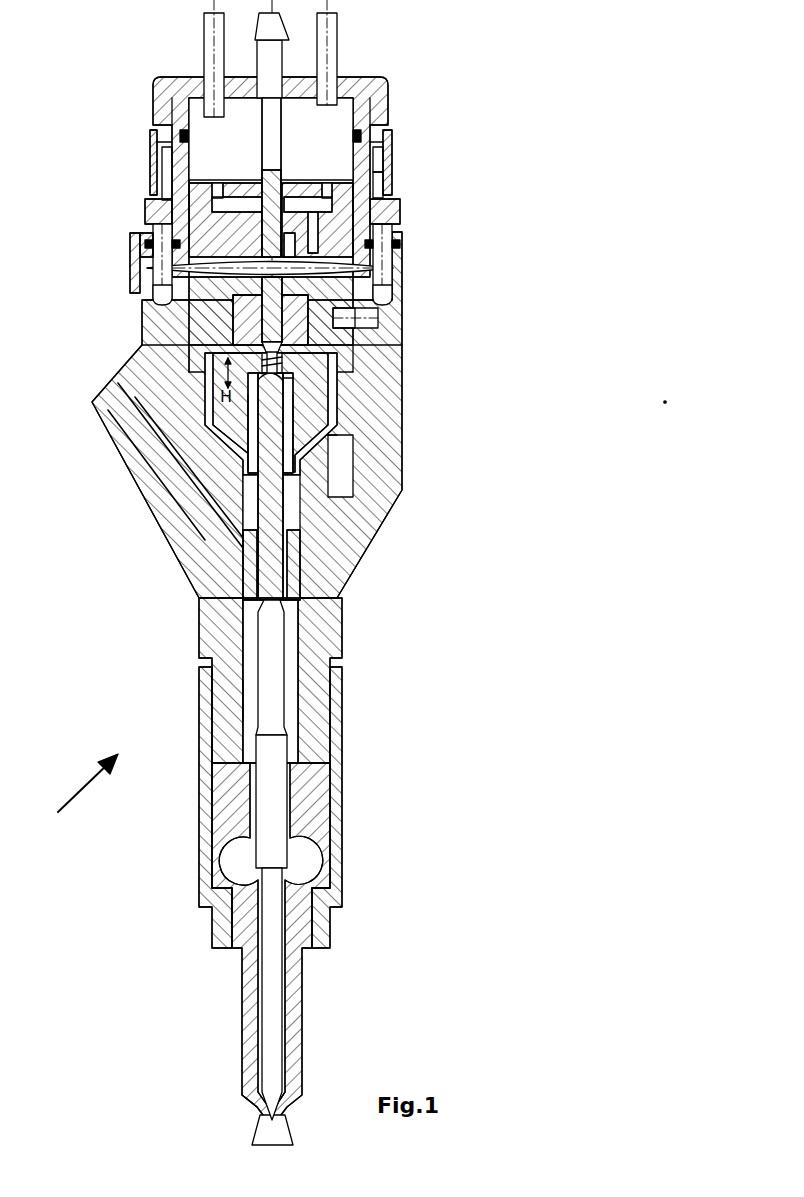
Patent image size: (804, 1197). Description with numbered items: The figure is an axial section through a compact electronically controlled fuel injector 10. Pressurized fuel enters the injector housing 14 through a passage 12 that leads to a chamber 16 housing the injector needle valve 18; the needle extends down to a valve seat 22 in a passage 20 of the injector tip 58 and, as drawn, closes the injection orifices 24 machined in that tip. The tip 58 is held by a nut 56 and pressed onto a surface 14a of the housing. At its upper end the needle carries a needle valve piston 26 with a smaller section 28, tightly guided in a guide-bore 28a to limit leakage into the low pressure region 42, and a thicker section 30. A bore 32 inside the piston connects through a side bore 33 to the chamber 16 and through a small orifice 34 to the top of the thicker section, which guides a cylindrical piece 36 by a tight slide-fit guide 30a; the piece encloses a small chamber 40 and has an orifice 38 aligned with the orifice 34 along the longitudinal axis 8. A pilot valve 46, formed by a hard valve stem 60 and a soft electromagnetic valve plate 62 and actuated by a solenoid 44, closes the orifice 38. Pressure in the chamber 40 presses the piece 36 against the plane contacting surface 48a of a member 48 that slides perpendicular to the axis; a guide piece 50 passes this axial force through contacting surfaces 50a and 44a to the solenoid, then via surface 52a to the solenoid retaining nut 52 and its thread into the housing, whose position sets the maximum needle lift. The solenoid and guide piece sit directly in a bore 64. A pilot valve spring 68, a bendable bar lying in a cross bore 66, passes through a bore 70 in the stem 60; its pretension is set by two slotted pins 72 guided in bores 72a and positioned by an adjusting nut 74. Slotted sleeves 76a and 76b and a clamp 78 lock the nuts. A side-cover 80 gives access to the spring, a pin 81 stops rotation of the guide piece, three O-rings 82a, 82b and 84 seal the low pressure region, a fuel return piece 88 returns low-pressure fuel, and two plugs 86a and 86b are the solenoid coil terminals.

The longitudinal axis 8 is at (275, 805).
The fuel injector 10 is at (71, 793).
The passage 12 is at (218, 528).
The injector housing 14 is at (222, 625).
The surface of the injector housing 14a is at (230, 807).
The space or chamber 16 is at (290, 677).
The injector needle valve 18 is at (265, 697).
The passage 20 is at (262, 1043).
The valve seat 22 is at (252, 1105).
The injection orifices 24 is at (255, 1145).
The needle valve piston 26 is at (354, 465).
The section with smaller outer diameter 28 is at (288, 514).
The guide-bore 28a is at (256, 497).
The thicker section 30 is at (300, 415).
The tight slide-fit guide 30a is at (240, 410).
The bore 32 is at (285, 520).
The side bore 33 is at (285, 545).
The orifice 34 is at (288, 388).
The cylindrical piece 36 is at (233, 442).
The orifice 38 is at (283, 365).
The small space or chamber 40 is at (286, 375).
The low pressure region 42 is at (200, 362).
The solenoid 44 is at (337, 117).
The contacting surface 44a is at (195, 178).
The pilot valve 46 is at (252, 230).
The member 48 is at (395, 347).
The plane contacting surface 48a is at (238, 331).
The guide piece 50 is at (195, 345).
The contacting surface 50a is at (240, 304).
The solenoid retaining nut 52 is at (378, 95).
The contacting surface 52a is at (323, 86).
The nut 56 is at (205, 843).
The injector tip 58 is at (225, 875).
The valve stem 60 is at (314, 236).
The valve plate 62 is at (245, 190).
The bore 64 is at (168, 172).
The cross bore 66 is at (205, 262).
The pilot valve spring 68 is at (385, 277).
The bore 70 is at (262, 258).
The slotted pins 72 is at (160, 226).
The bore 72a is at (160, 300).
The adjusting nut 74 is at (400, 210).
The slotted sleeve 76a is at (383, 165).
The slotted sleeve 76b is at (383, 187).
The clamp 78 is at (392, 143).
The side-cover 80 is at (132, 290).
The pin 81 is at (368, 335).
The O-ring 82a is at (132, 243).
The O-ring 82b is at (398, 247).
The O-ring 84 is at (172, 140).
The plug 86a is at (213, 22).
The plug 86b is at (337, 22).
The fuel return piece 88 is at (268, 50).